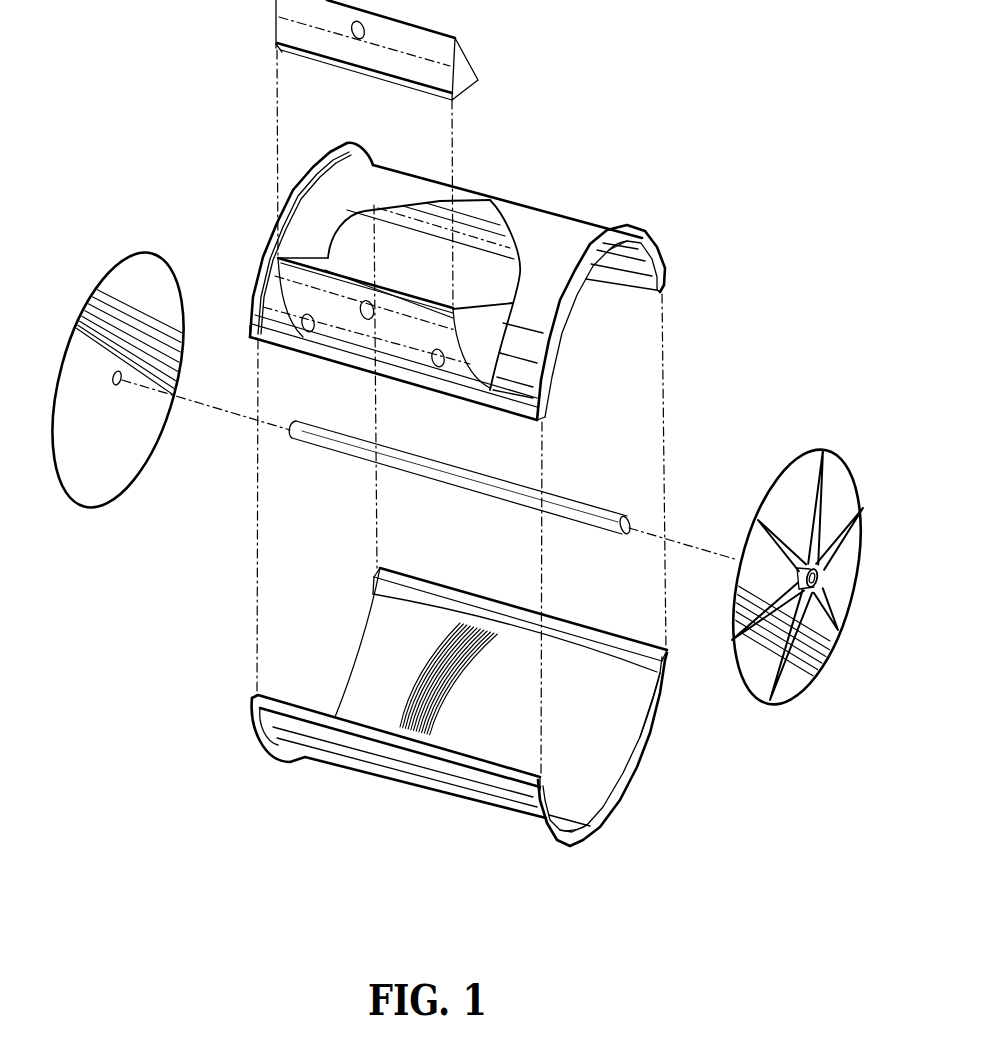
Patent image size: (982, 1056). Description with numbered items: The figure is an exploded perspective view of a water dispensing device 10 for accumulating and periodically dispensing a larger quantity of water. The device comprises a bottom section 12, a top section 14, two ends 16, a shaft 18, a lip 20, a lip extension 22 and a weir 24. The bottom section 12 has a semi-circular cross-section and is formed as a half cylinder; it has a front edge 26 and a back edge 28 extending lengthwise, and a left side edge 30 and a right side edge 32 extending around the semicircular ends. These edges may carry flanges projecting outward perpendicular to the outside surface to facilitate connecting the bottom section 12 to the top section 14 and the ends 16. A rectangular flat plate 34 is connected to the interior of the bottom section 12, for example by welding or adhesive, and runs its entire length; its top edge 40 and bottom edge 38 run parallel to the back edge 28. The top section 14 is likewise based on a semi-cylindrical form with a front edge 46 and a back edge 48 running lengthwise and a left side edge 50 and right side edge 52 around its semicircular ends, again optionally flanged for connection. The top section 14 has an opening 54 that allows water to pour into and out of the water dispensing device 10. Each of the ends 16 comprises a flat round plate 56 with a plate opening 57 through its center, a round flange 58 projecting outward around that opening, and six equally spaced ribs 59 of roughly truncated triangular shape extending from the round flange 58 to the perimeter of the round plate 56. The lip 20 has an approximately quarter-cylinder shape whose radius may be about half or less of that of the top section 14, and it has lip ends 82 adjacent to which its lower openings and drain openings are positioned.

The water dispensing device 10 is at (138, 108).
The bottom section 12 is at (403, 770).
The top section 14 is at (560, 228).
The ends 16 is at (147, 262).
The shaft 18 is at (595, 502).
The lip 20 is at (300, 298).
The lip extension 22 is at (286, 12).
The weir 24 is at (418, 285).
The front edge 26 is at (295, 708).
The back edge 28 is at (457, 600).
The left side edge 30 is at (285, 760).
The right side edge 32 is at (575, 846).
The plate 34 is at (628, 722).
The bottom edge of the plate 38 is at (598, 793).
The top edge 40 is at (407, 600).
The front edge 46 is at (432, 394).
The back edge 48 is at (666, 294).
The left side edge 50 is at (345, 146).
The right side edge 52 is at (663, 250).
The opening 54 is at (465, 258).
The round plate 56 is at (168, 312).
The plate opening 57 is at (115, 386).
The round flange 58 is at (820, 585).
The ribs 59 is at (783, 672).
The lip ends 82 is at (483, 336).